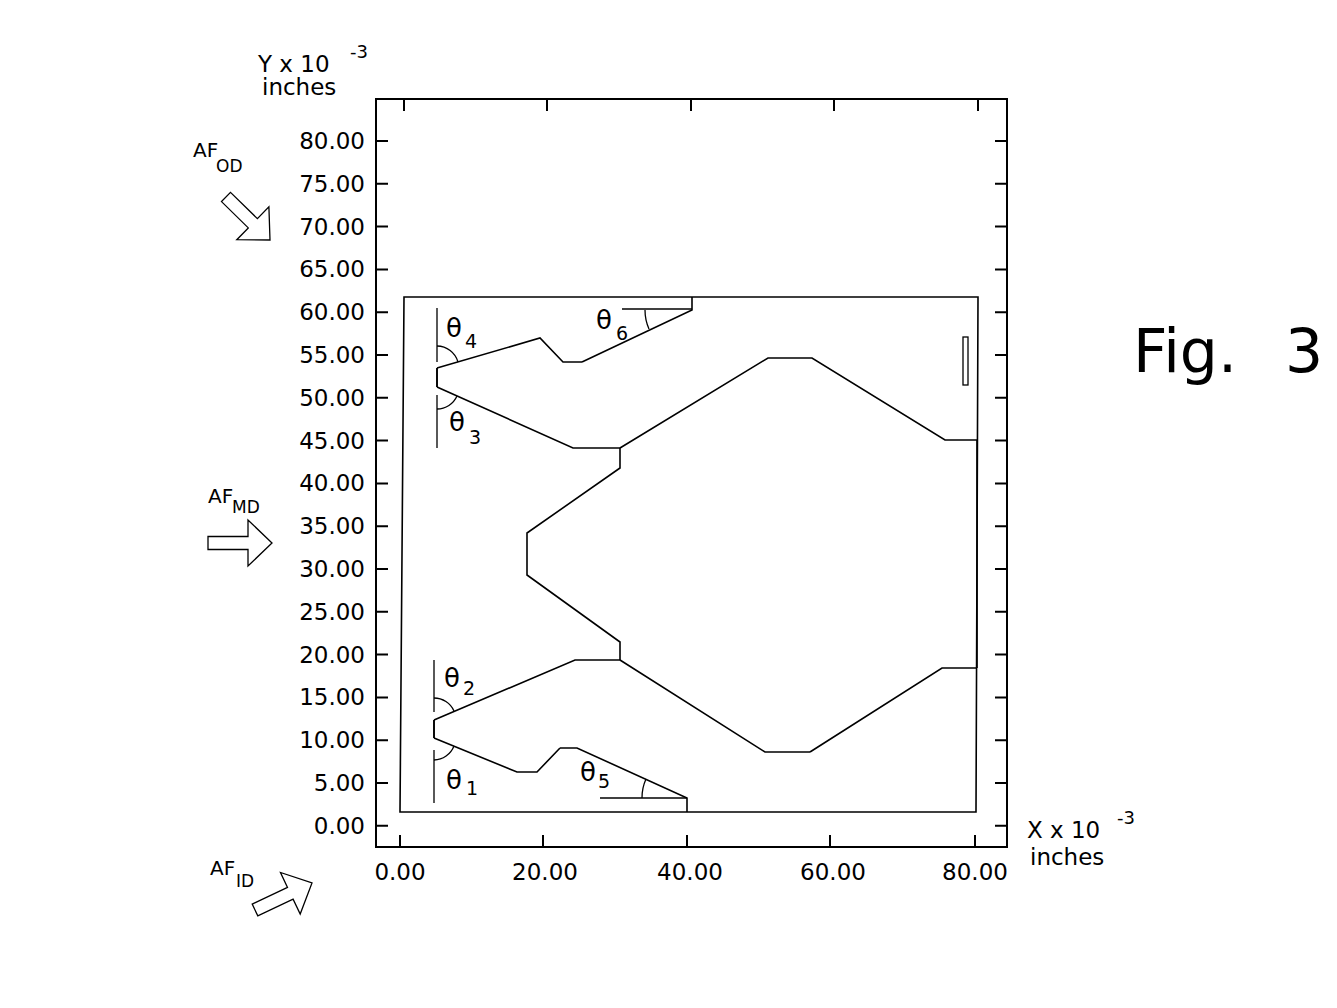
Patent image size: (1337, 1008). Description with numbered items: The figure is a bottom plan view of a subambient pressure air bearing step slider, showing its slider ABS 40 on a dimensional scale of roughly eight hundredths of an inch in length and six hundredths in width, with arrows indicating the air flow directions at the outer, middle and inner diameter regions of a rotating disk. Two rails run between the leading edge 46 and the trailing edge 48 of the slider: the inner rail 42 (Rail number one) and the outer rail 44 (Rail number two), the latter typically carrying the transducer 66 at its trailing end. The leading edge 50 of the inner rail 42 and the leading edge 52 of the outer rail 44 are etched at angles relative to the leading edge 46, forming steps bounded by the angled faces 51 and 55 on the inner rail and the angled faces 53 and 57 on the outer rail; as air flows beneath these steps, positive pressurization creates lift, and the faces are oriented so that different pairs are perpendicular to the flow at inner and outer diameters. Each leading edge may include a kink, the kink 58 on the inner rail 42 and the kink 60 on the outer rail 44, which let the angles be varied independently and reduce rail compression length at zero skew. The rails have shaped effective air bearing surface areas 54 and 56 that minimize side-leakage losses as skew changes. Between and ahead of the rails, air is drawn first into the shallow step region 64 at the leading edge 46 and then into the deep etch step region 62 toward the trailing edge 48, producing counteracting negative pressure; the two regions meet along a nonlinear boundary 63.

The slider ABS 40 is at (616, 220).
The inner rail (ABS Rail #1) 42 is at (705, 720).
The outer rail (ABS Rail #2) 44 is at (707, 344).
The leading edge of the slider 46 is at (405, 512).
The trailing edge of the slider 48 is at (976, 492).
The leading edge of inner rail 50 is at (438, 727).
The angled face of inner rail 51 is at (518, 685).
The leading edge of outer rail 52 is at (442, 378).
The angled face of outer rail 53 is at (520, 423).
The effective air bearing surface area of inner rail 54 is at (653, 692).
The angled face of inner rail 55 is at (498, 767).
The effective air bearing surface area of outer rail 56 is at (690, 382).
The angled face of outer rail 57 is at (495, 345).
The kink of inner rail 58 is at (567, 762).
The kink of outer rail 60 is at (565, 308).
The deep etch step region 62 is at (777, 541).
The nonlinear boundary 63 is at (528, 562).
The shallow step region 64 is at (476, 573).
The transducer 66 is at (961, 355).